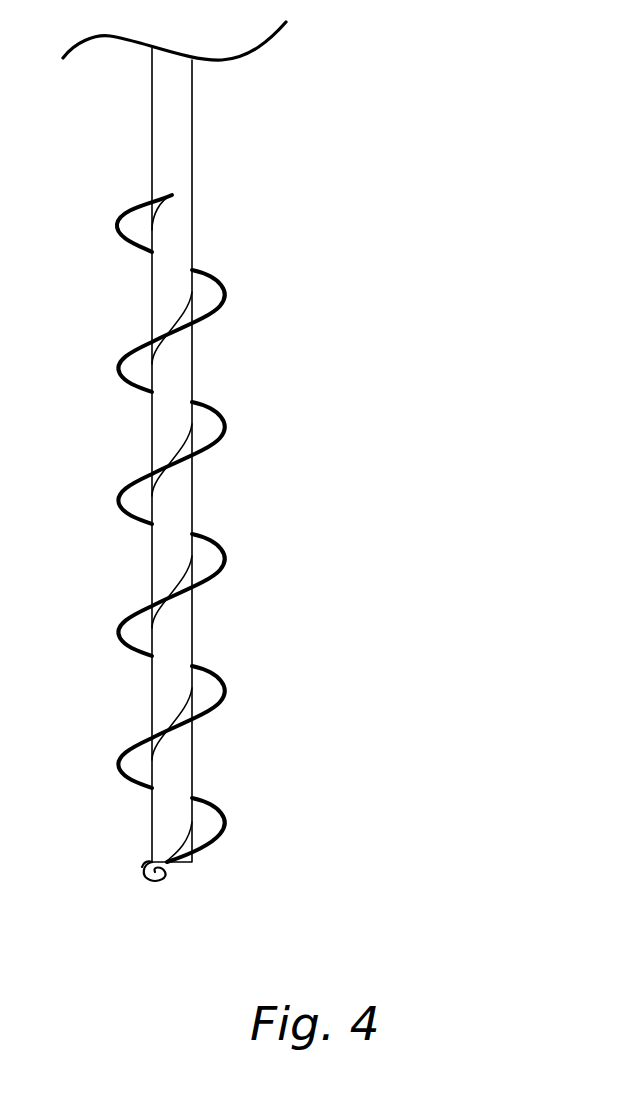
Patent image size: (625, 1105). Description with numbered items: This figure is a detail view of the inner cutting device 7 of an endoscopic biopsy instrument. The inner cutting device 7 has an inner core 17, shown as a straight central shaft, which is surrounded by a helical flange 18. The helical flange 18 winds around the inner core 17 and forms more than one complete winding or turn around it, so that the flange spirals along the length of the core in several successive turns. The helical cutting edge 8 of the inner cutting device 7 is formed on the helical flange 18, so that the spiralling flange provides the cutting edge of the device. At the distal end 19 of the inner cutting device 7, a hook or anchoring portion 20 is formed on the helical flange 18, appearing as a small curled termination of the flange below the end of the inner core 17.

The inner cutting device 7 is at (297, 191).
The helical cutting edge 8 is at (118, 358).
The inner core 17 is at (180, 368).
The helical flange 18 is at (138, 355).
The distal end 19 is at (158, 880).
The hook or anchoring portion 20 is at (142, 866).